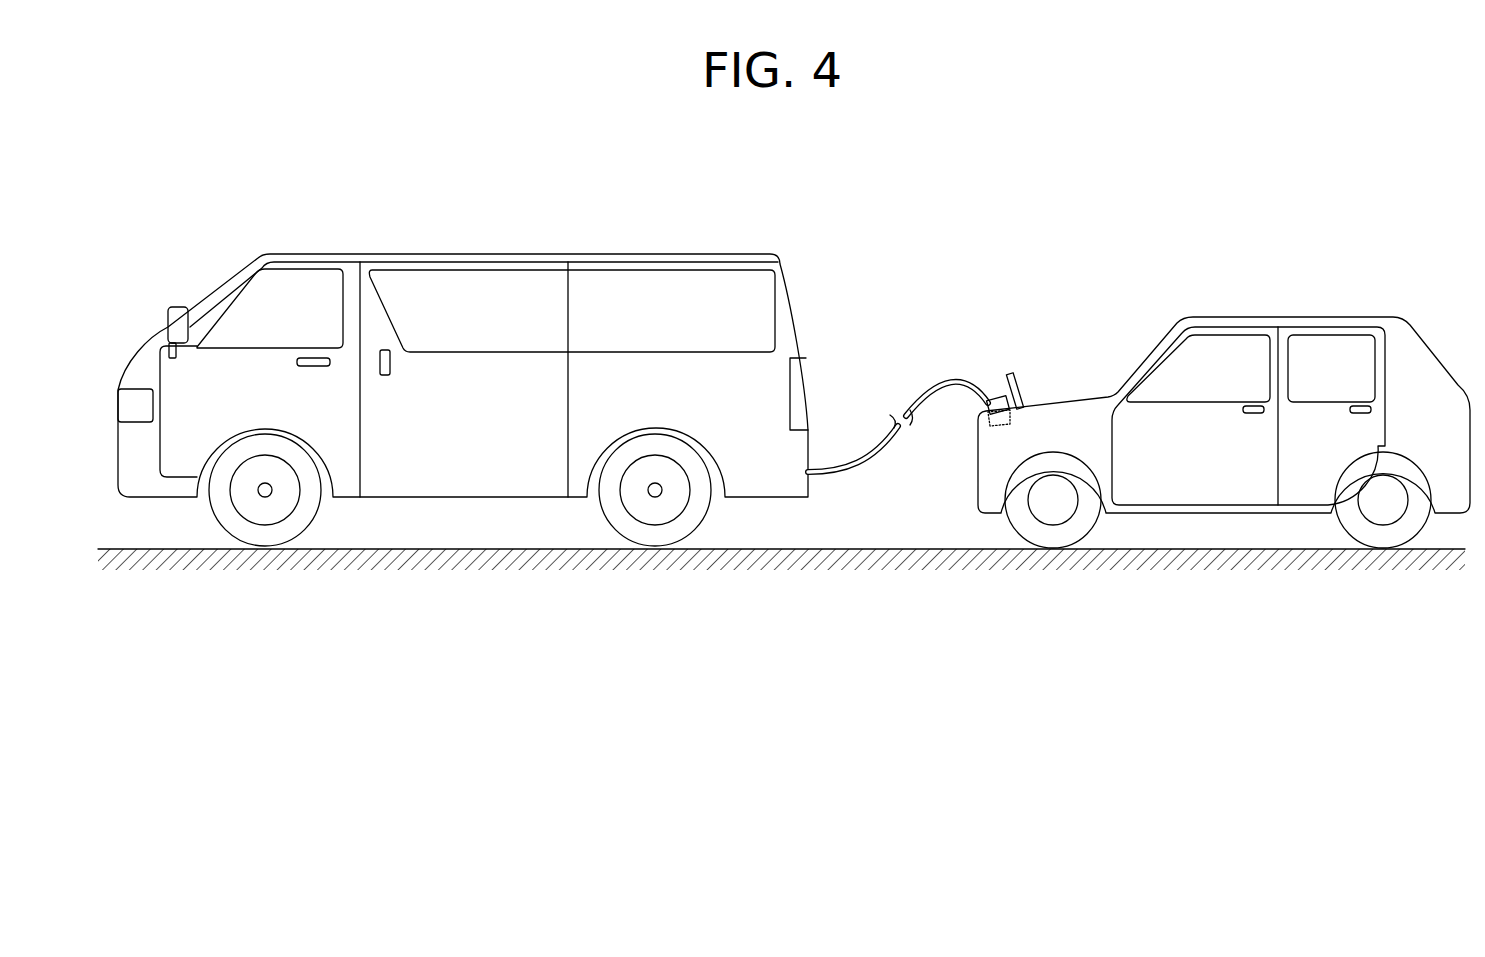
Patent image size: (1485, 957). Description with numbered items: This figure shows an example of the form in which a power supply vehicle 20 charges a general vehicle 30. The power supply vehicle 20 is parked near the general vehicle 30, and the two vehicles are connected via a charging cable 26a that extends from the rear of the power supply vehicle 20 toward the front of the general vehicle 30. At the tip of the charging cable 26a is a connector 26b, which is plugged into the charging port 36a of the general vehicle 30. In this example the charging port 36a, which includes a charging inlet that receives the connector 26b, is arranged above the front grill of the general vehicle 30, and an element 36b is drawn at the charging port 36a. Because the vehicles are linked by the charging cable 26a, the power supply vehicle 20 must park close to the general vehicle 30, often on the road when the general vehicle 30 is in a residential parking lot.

The power supply vehicle 20 is at (518, 246).
The charging cable 26a is at (927, 392).
The connector 26b is at (988, 405).
The general vehicle 30 is at (1285, 306).
The charging port 36a is at (1000, 424).
The inlet lid 36b is at (1022, 381).